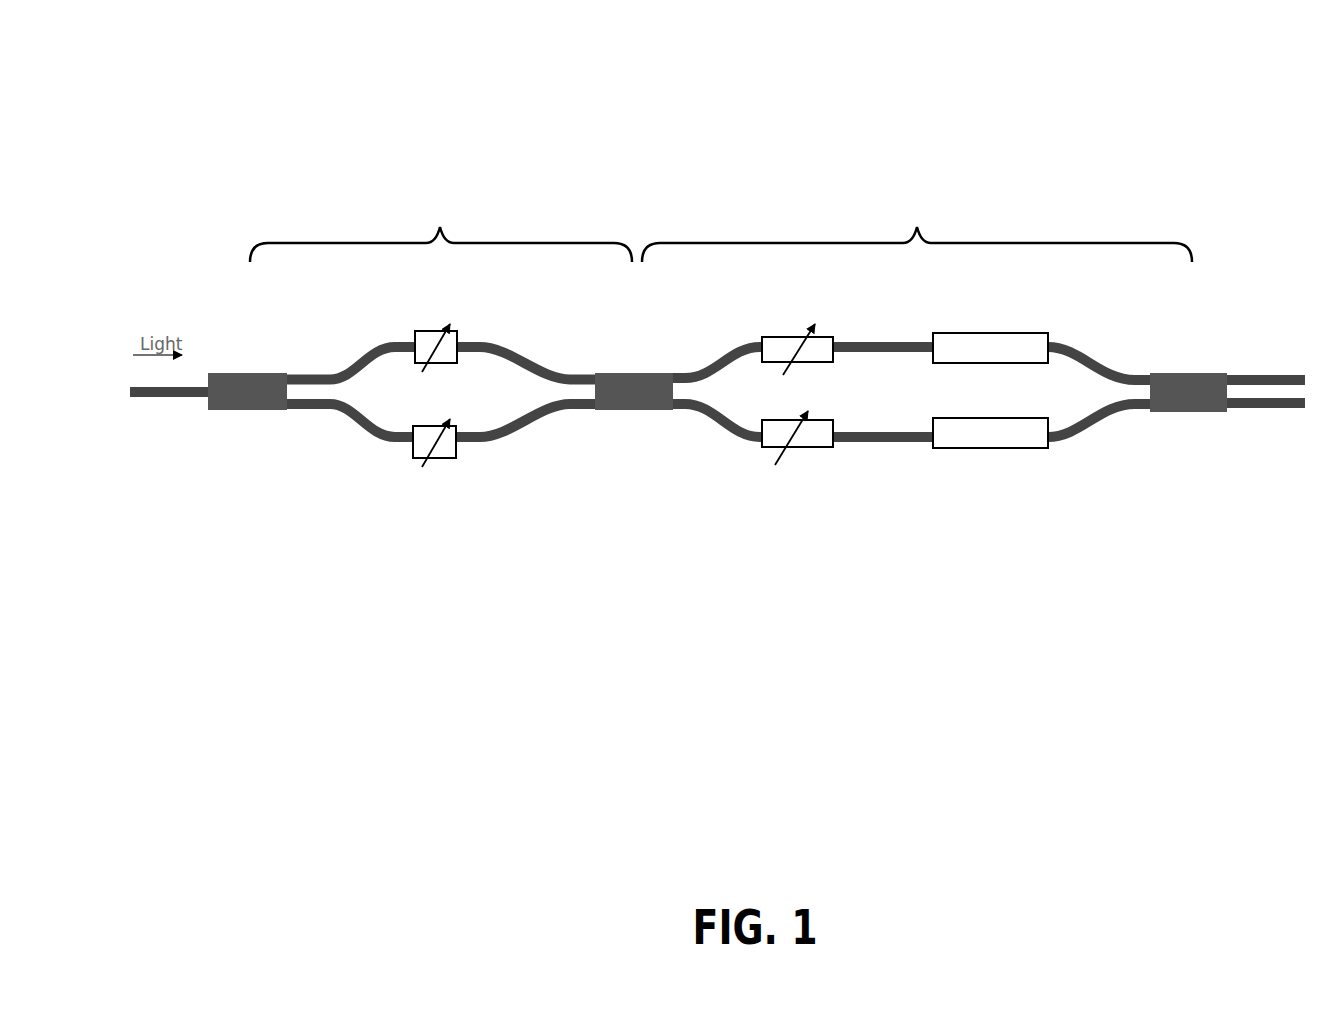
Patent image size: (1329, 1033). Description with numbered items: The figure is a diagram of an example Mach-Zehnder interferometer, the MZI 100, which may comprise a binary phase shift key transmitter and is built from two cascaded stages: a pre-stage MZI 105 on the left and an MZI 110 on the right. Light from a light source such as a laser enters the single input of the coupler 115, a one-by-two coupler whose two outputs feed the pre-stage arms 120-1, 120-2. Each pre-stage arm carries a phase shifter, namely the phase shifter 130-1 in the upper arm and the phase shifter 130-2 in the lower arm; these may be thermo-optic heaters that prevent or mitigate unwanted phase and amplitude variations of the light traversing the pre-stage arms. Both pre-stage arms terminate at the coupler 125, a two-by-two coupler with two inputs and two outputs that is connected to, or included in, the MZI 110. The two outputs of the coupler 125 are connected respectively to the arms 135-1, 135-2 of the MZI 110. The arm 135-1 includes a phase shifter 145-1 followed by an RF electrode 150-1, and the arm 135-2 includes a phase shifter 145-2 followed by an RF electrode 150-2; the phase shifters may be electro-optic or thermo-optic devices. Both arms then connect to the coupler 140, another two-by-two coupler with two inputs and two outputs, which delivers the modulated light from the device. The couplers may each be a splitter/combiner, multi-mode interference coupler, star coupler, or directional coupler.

The MZI 100 is at (243, 51).
The pre-stage MZI 105 is at (441, 226).
The MZI 110 is at (917, 226).
The coupler 115 is at (247, 391).
The pre-stage arm 120-1 is at (328, 373).
The pre-stage arm 120-2 is at (327, 411).
The coupler 125 is at (634, 391).
The phase shifter 130-1 is at (435, 333).
The phase shifter 130-2 is at (446, 452).
The arm 135-1 is at (724, 368).
The arm 135-2 is at (727, 416).
The coupler 140 is at (1188, 392).
The phase shifter 145-1 is at (785, 341).
The phase shifter 145-2 is at (813, 441).
The RF electrode 150-1 is at (993, 340).
The RF electrode 150-2 is at (1003, 440).